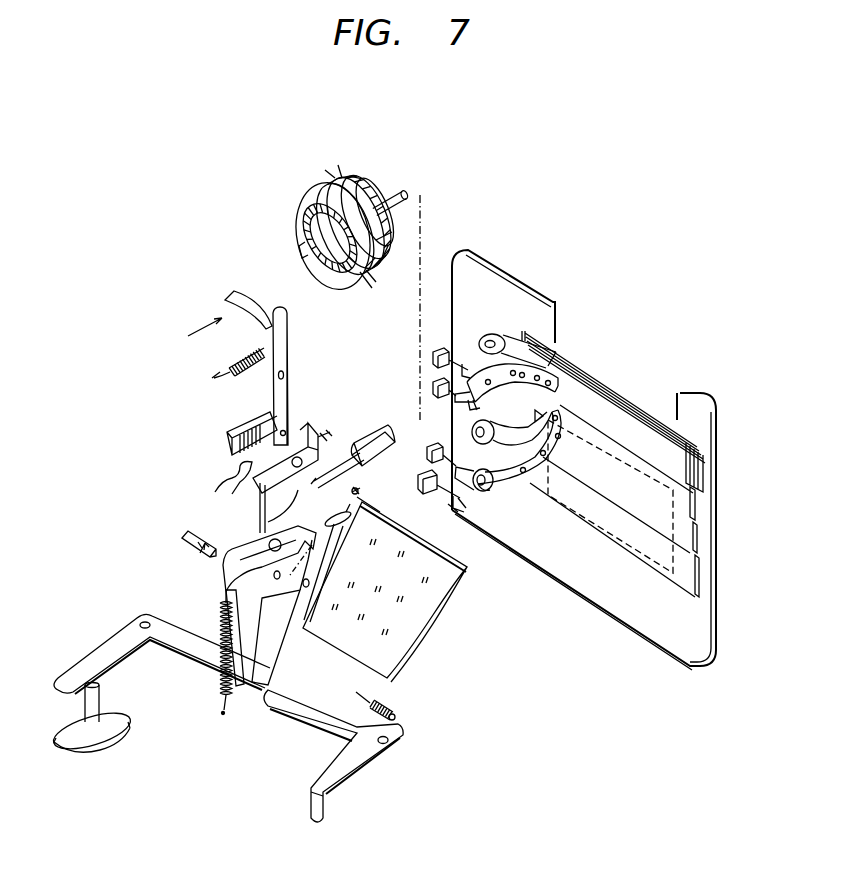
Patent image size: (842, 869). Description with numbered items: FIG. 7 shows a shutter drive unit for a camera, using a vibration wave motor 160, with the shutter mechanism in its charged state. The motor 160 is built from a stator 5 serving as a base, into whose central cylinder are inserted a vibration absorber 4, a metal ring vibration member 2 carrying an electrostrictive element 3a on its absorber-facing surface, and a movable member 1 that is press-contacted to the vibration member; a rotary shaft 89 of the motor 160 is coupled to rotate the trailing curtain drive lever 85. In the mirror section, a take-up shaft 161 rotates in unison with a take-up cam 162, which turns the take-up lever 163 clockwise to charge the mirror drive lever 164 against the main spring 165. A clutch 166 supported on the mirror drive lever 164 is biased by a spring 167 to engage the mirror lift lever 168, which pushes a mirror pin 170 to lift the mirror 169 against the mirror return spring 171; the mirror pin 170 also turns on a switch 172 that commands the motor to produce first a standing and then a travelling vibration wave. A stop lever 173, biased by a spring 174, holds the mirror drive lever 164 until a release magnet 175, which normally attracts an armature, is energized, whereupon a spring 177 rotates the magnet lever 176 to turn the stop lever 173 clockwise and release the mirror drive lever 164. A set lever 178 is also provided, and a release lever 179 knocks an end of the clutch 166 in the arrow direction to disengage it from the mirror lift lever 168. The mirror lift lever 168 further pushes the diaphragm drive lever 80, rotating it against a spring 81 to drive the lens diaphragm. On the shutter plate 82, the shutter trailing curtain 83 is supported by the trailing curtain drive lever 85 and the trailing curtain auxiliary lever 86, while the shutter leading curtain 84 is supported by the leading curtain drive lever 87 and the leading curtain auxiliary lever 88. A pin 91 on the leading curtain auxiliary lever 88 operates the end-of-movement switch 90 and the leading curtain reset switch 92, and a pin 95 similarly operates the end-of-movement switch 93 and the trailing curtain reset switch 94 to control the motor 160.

The vibration wave motor 160 is at (393, 266).
The vibration absorber 4 is at (342, 188).
The movable member 1 is at (364, 196).
The rotary shaft 89 is at (408, 200).
The stator 5 is at (312, 216).
The metal ring vibration member 2 is at (395, 236).
The electrostrictive element 3a is at (392, 252).
The set lever 178 is at (243, 298).
The magnet lever 176 is at (290, 364).
The spring 177 is at (240, 378).
The release magnet 175 is at (226, 437).
The stop lever 173 is at (238, 490).
The spring 174 is at (318, 433).
The mirror pin 170 is at (338, 468).
The switch 172 is at (372, 440).
The mirror return spring 171 is at (364, 494).
The mirror drive lever 164 is at (325, 478).
The spring 167 is at (272, 513).
The release lever 179 is at (184, 532).
The clutch 166 is at (240, 558).
The main spring 165 is at (218, 614).
The take-up lever 163 is at (116, 635).
The take-up shaft 161 is at (105, 688).
The take-up cam 162 is at (120, 722).
The mirror lift lever 168 is at (282, 650).
The mirror 169 is at (410, 637).
The spring 81 is at (395, 717).
The diaphragm drive lever 80 is at (360, 774).
The switch 93 is at (435, 352).
The trailing curtain reset switch 94 is at (432, 382).
The pin 95 is at (447, 403).
The switch 90 is at (445, 450).
The leading curtain reset switch 92 is at (432, 494).
The pin 91 is at (455, 506).
The leading curtain auxiliary lever 88 is at (500, 492).
The trailing curtain drive lever 85 is at (497, 333).
The trailing curtain auxiliary lever 86 is at (556, 345).
The leading curtain drive lever 87 is at (578, 420).
The shutter trailing curtain 83 is at (685, 462).
The shutter leading curtain 84 is at (692, 565).
The shutter plate 82 is at (695, 658).